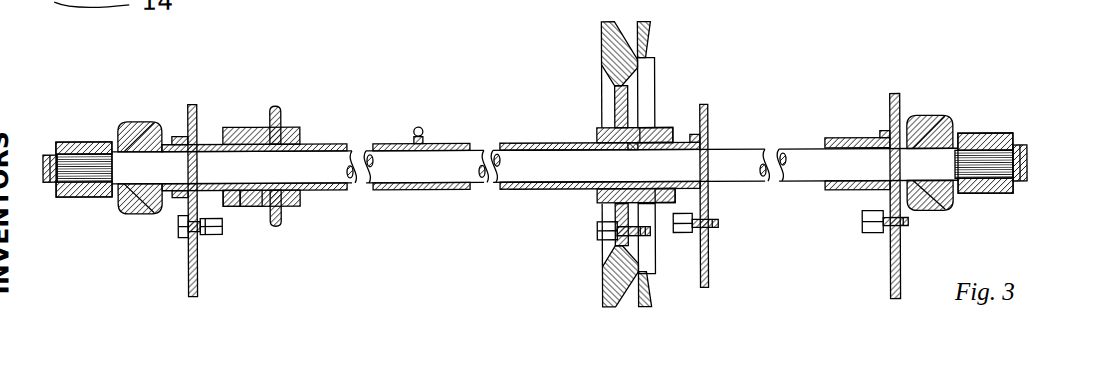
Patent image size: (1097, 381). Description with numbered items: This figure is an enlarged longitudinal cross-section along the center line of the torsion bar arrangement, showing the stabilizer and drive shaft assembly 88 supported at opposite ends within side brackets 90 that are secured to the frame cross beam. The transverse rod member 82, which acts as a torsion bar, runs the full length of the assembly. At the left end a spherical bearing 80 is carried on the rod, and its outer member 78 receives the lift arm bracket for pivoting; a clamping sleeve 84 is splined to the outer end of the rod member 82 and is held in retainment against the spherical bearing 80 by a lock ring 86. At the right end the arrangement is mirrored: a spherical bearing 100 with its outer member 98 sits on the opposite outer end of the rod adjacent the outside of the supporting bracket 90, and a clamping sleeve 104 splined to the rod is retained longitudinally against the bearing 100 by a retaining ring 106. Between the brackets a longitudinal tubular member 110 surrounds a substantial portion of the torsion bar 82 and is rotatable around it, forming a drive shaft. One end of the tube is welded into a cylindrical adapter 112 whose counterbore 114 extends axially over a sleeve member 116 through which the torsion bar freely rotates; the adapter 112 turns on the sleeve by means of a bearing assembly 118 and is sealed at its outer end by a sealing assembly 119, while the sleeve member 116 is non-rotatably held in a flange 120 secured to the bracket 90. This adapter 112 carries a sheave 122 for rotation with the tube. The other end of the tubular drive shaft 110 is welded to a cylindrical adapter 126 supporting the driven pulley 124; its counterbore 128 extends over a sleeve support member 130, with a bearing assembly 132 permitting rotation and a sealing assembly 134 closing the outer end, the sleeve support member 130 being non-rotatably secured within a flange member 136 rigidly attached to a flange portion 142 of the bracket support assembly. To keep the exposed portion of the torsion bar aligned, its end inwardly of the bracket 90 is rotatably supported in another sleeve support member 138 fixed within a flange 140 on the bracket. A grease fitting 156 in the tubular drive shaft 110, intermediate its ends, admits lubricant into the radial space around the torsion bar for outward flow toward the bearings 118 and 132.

The transverse rod member 82 is at (157, 158).
The clamping sleeve 84 is at (76, 195).
The lock ring 86 is at (55, 150).
The outer member 78 is at (135, 120).
The spherical bearing 80 is at (131, 212).
The side bracket 90 is at (188, 279).
The sleeve member 116 is at (210, 143).
The bearing assembly 118 is at (248, 126).
The cylindrical adapter 112 is at (300, 197).
The counterbore 114 is at (248, 205).
The sealing assembly 119 is at (222, 205).
The sheave 122 is at (281, 108).
The flange 120 is at (200, 237).
The stabilizer and drive shaft assembly 88 is at (384, 144).
The grease fitting 156 is at (420, 127).
The tubular member 110 is at (503, 143).
The pulley 124 is at (603, 40).
The cylindrical adapter 126 is at (600, 128).
The counterbore 128 is at (662, 128).
The sleeve support member 130 is at (693, 130).
The sealing assembly 134 is at (680, 191).
The bearing assembly 132 is at (658, 200).
The flange member 136 is at (709, 240).
The flange portion 142 is at (709, 283).
The sleeve support member 138 is at (848, 139).
The flange 140 is at (882, 205).
The outer member 98 is at (935, 117).
The spherical bearing 100 is at (950, 130).
The clamping sleeve 104 is at (988, 195).
The retaining ring 106 is at (1020, 147).